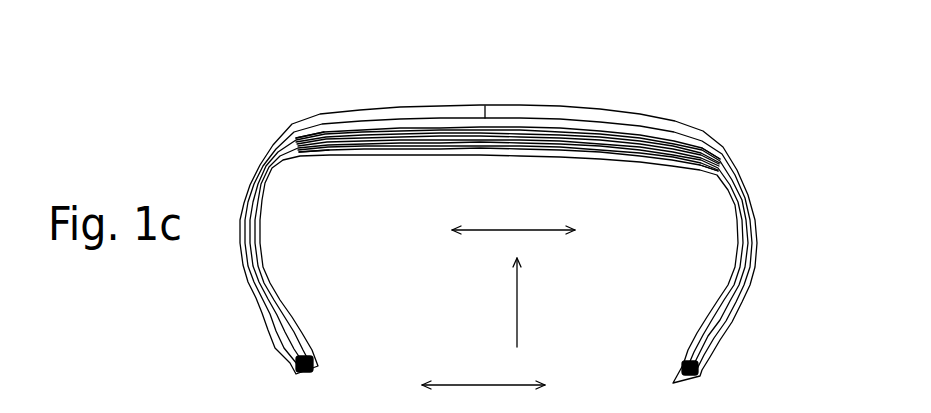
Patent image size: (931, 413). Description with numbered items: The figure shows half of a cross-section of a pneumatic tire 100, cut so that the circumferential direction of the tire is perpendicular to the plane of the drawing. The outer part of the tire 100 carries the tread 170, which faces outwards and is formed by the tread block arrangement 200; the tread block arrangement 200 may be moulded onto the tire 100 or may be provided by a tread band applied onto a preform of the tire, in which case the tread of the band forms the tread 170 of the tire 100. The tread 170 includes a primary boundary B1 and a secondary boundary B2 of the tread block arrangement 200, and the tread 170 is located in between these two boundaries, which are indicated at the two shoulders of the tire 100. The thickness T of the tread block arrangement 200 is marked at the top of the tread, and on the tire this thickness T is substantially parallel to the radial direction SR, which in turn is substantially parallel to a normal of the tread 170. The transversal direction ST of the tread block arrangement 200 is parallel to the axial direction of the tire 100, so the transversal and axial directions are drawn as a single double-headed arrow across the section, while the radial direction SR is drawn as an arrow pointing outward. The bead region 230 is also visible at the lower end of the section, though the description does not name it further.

The tire 100 is at (748, 193).
The tread 170 is at (535, 90).
The tread block arrangement 200 is at (481, 110).
The bead core 230 is at (455, 384).
The primary boundary B1 is at (293, 112).
The secondary boundary B2 is at (725, 138).
The thickness T is at (478, 113).
The transversal direction ST is at (500, 283).
The radial direction SR is at (540, 302).